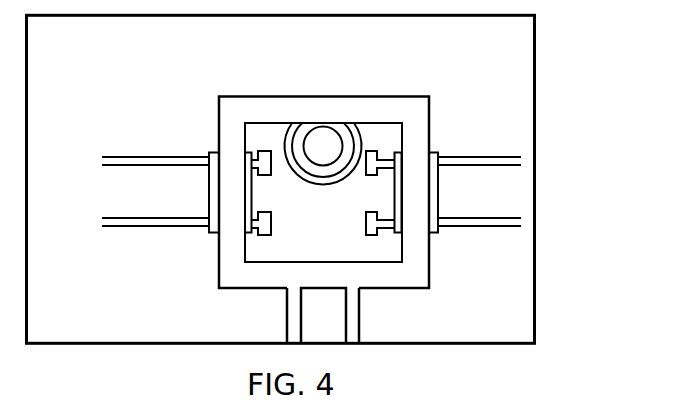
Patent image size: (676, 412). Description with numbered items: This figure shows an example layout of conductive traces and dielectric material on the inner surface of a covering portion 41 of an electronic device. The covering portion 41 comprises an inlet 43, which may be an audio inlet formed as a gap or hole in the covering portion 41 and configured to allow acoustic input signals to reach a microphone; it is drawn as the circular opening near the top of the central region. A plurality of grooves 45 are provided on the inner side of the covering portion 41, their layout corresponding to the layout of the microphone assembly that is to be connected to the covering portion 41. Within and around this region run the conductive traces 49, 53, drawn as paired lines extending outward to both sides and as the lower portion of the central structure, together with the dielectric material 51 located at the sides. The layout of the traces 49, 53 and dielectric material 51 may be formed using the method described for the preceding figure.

The covering portion 41 is at (535, 58).
The inlet 43 is at (325, 142).
The grooves 45 is at (235, 288).
The conductive traces 49 is at (133, 163).
The dielectric material 51 is at (433, 185).
The conductive traces 53 is at (418, 277).